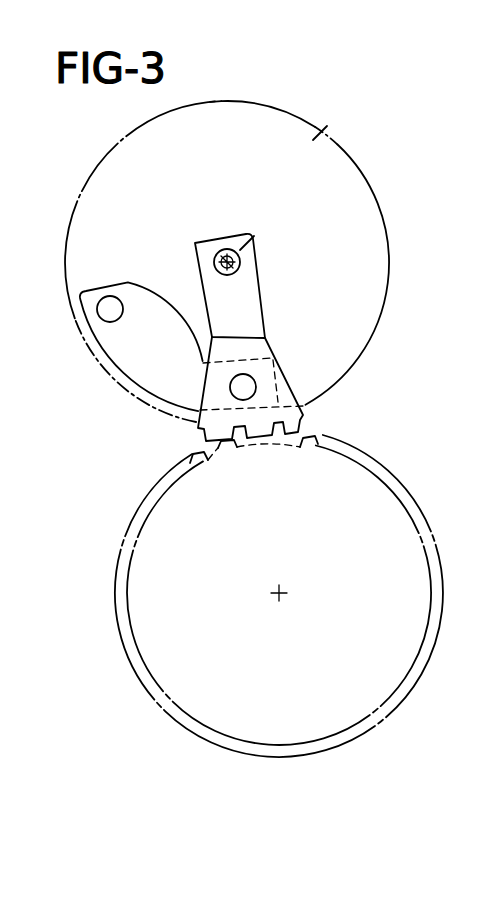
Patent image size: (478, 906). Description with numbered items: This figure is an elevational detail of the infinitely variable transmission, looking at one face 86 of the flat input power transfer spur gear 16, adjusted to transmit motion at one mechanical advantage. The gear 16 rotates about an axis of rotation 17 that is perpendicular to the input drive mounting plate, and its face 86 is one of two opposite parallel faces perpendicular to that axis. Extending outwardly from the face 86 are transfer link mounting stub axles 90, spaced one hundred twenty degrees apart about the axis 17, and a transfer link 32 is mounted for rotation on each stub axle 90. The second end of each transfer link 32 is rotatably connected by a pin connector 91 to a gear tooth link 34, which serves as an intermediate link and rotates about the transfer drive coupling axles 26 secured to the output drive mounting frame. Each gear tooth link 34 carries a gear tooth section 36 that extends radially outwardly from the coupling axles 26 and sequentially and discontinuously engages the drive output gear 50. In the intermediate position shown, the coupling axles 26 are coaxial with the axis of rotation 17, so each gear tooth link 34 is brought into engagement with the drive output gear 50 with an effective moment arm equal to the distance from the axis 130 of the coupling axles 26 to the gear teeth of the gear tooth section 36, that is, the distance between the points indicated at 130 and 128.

The input power transfer spur gear 16 is at (274, 98).
The face of the input power transfer gear 86 is at (302, 146).
The transfer drive coupling axles 26 is at (223, 251).
The axis of the stub axles 130 is at (233, 272).
The axis of rotation 17 is at (262, 255).
The gear tooth link 34 is at (272, 306).
The rotatable pin connector 91 is at (256, 380).
The gear tooth section 36 is at (302, 409).
The transfer link 32 is at (118, 388).
The transfer link mounting stub axle 90 is at (104, 310).
The drive output gear 50 is at (133, 526).
The point at the gear teeth 128 is at (257, 456).